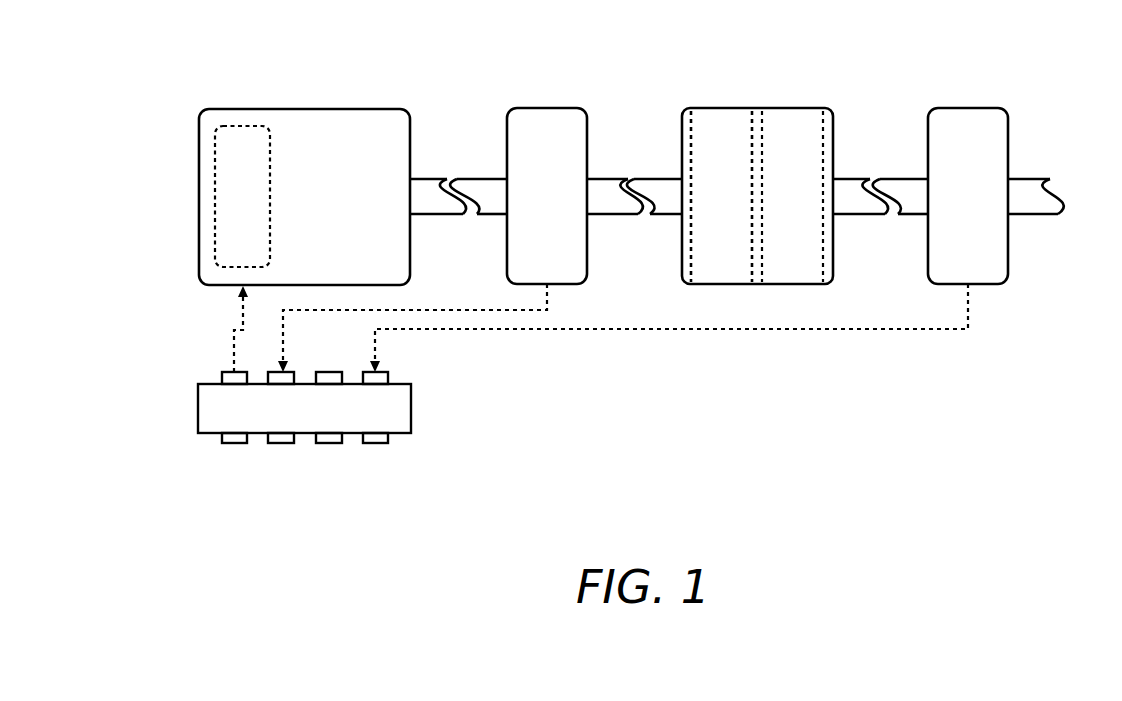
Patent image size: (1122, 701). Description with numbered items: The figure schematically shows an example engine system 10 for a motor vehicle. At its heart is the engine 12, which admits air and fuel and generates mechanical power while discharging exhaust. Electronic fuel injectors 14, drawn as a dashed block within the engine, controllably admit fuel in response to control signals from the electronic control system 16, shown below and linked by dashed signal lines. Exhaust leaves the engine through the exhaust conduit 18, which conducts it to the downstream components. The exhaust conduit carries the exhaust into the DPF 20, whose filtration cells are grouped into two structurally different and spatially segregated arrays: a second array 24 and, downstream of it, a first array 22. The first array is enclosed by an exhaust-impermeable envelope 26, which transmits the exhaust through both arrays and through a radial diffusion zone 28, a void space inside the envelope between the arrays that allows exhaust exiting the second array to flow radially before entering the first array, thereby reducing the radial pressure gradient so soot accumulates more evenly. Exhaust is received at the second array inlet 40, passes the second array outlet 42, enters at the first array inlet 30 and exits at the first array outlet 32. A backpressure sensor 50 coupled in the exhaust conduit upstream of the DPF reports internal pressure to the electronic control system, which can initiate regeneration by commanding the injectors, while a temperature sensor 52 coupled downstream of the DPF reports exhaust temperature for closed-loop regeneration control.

The engine system 10 is at (181, 92).
The engine 12 is at (292, 209).
The electronic fuel injectors 14 is at (230, 209).
The electronic control system 16 is at (293, 420).
The exhaust conduit 18 is at (442, 162).
The DPF 20 is at (648, 118).
The first array 22 is at (780, 209).
The second array 24 is at (708, 209).
The exhaust-impermeable envelope 26 is at (834, 123).
The radial diffusion zone 28 is at (756, 112).
The first array inlet 30 is at (763, 124).
The first array outlet 32 is at (825, 248).
The second array inlet 40 is at (690, 249).
The second array outlet 42 is at (750, 268).
The backpressure sensor 50 is at (534, 209).
The temperature sensor 52 is at (955, 209).